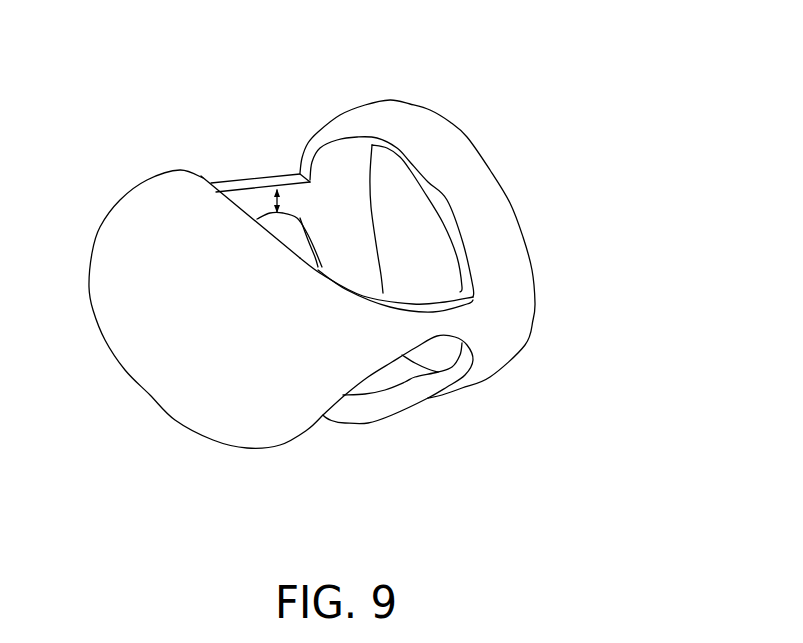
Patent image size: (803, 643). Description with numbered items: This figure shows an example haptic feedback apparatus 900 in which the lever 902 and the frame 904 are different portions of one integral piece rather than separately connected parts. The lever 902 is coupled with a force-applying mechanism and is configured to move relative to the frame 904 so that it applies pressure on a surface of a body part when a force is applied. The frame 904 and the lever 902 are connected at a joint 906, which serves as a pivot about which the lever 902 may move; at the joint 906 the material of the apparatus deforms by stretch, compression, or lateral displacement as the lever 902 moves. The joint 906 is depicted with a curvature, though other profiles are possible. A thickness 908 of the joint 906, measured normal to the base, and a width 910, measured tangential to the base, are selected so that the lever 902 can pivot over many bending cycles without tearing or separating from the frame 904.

The haptic feedback apparatus 900 is at (177, 77).
The lever 902 is at (533, 340).
The frame 904 is at (88, 297).
The joint 906 is at (441, 300).
The thickness 908 is at (249, 178).
The width 910 is at (297, 202).